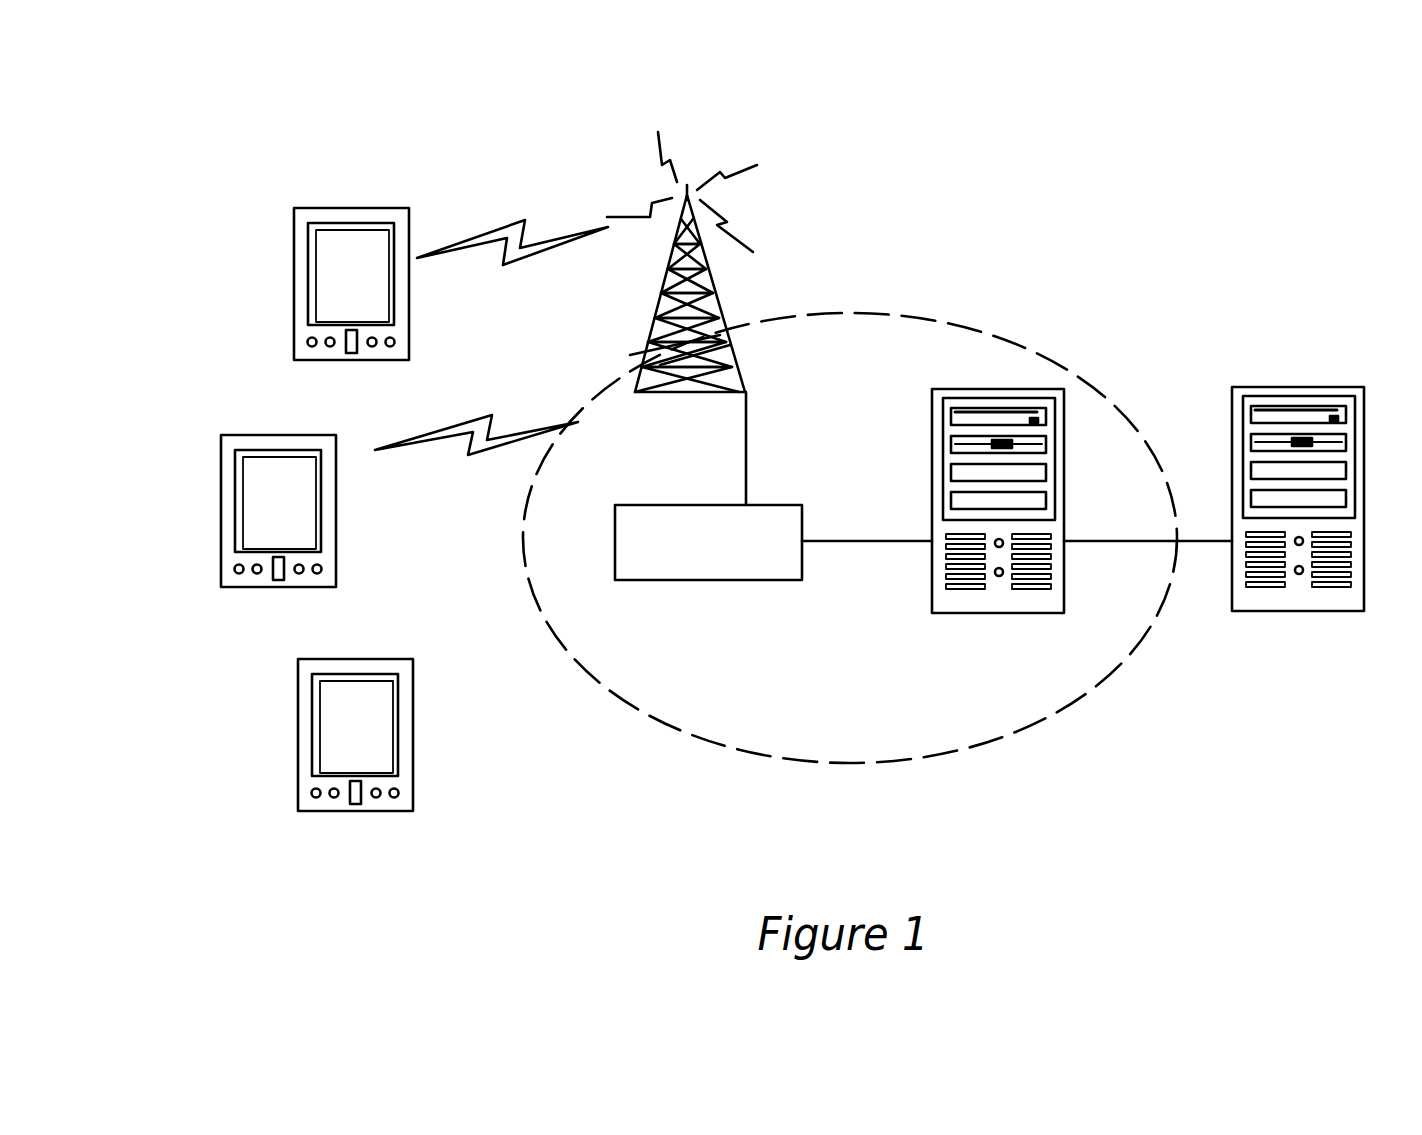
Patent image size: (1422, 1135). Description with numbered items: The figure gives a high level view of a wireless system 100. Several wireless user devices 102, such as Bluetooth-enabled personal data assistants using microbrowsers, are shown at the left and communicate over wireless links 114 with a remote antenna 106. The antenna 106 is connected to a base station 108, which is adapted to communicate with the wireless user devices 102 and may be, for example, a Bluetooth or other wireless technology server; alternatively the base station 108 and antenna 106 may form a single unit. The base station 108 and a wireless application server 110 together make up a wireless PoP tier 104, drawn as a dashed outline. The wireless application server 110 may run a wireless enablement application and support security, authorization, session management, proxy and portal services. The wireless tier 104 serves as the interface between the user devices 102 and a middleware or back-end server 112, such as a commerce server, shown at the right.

The system 100 is at (225, 147).
The wireless user devices 102 is at (222, 513).
The wireless PoP tier 104 is at (888, 317).
The remote antenna 106 is at (725, 313).
The base station 108 is at (700, 580).
The wireless application server 110 is at (1033, 389).
The middleware or back-end server 112 is at (1279, 387).
The wireless communication link 114 is at (525, 220).